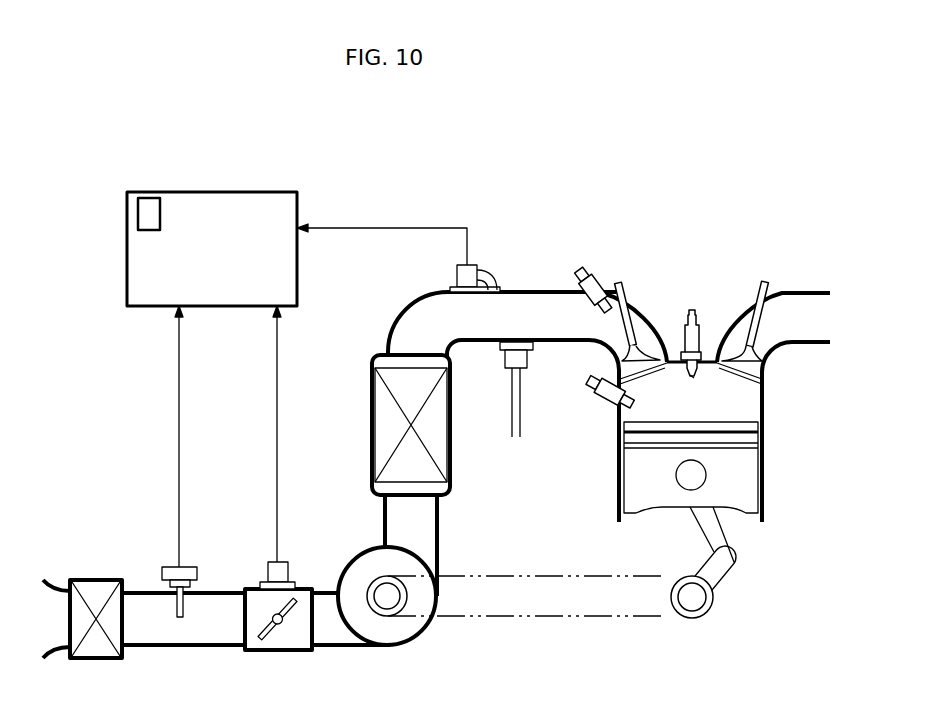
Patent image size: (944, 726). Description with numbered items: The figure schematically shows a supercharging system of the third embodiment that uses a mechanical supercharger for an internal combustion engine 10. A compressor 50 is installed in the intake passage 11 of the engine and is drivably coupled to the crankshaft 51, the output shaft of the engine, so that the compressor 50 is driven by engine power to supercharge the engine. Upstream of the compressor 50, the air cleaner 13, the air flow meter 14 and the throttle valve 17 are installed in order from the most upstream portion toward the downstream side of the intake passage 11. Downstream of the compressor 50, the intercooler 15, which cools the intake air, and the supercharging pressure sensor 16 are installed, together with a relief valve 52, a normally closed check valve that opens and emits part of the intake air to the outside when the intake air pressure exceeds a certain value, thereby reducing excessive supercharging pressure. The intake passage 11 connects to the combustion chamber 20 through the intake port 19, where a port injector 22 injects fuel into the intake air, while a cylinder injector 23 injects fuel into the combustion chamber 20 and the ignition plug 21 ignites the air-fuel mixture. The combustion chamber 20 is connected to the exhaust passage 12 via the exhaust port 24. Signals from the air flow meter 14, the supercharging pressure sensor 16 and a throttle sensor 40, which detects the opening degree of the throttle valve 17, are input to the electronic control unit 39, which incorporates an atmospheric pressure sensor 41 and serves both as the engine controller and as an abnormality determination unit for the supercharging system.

The internal combustion engine 10 is at (772, 251).
The intake passage 11 is at (195, 647).
The exhaust passage 12 is at (812, 344).
The air cleaner 13 is at (98, 580).
The air flow meter 14 is at (199, 574).
The intercooler 15 is at (372, 426).
The supercharging pressure sensor 16 is at (457, 274).
The throttle valve 17 is at (293, 618).
The intake port 19 is at (621, 341).
The combustion chamber 20 is at (705, 410).
The ignition plug 21 is at (701, 325).
The port injector 22 is at (597, 278).
The cylinder injector 23 is at (595, 389).
The exhaust port 24 is at (795, 334).
The electronic control unit 39 is at (127, 240).
The throttle sensor 40 is at (292, 571).
The atmospheric pressure sensor 41 is at (162, 214).
The compressor 50 is at (382, 648).
The crankshaft 51 is at (692, 608).
The relief valve 52 is at (505, 358).